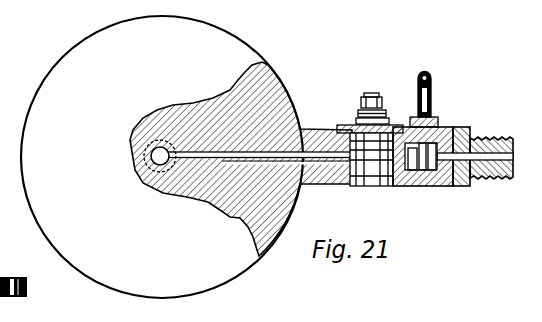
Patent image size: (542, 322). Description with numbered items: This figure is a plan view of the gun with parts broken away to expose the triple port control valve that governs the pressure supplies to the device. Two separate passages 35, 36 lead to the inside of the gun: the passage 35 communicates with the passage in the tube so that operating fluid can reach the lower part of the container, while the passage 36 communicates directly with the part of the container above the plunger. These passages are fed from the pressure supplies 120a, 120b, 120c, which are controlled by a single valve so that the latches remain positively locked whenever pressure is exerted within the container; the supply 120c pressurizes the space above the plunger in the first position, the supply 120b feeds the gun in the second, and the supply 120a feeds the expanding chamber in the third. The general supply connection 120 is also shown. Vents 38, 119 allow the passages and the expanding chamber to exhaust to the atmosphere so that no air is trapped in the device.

The passage 35 is at (179, 156).
The passage 36 is at (278, 167).
The vent 38 is at (428, 90).
The vent 119 is at (333, 129).
The pipe fitting 120 is at (479, 171).
The supply 120a is at (449, 177).
The supply 120b is at (442, 187).
The supply 120c is at (433, 199).